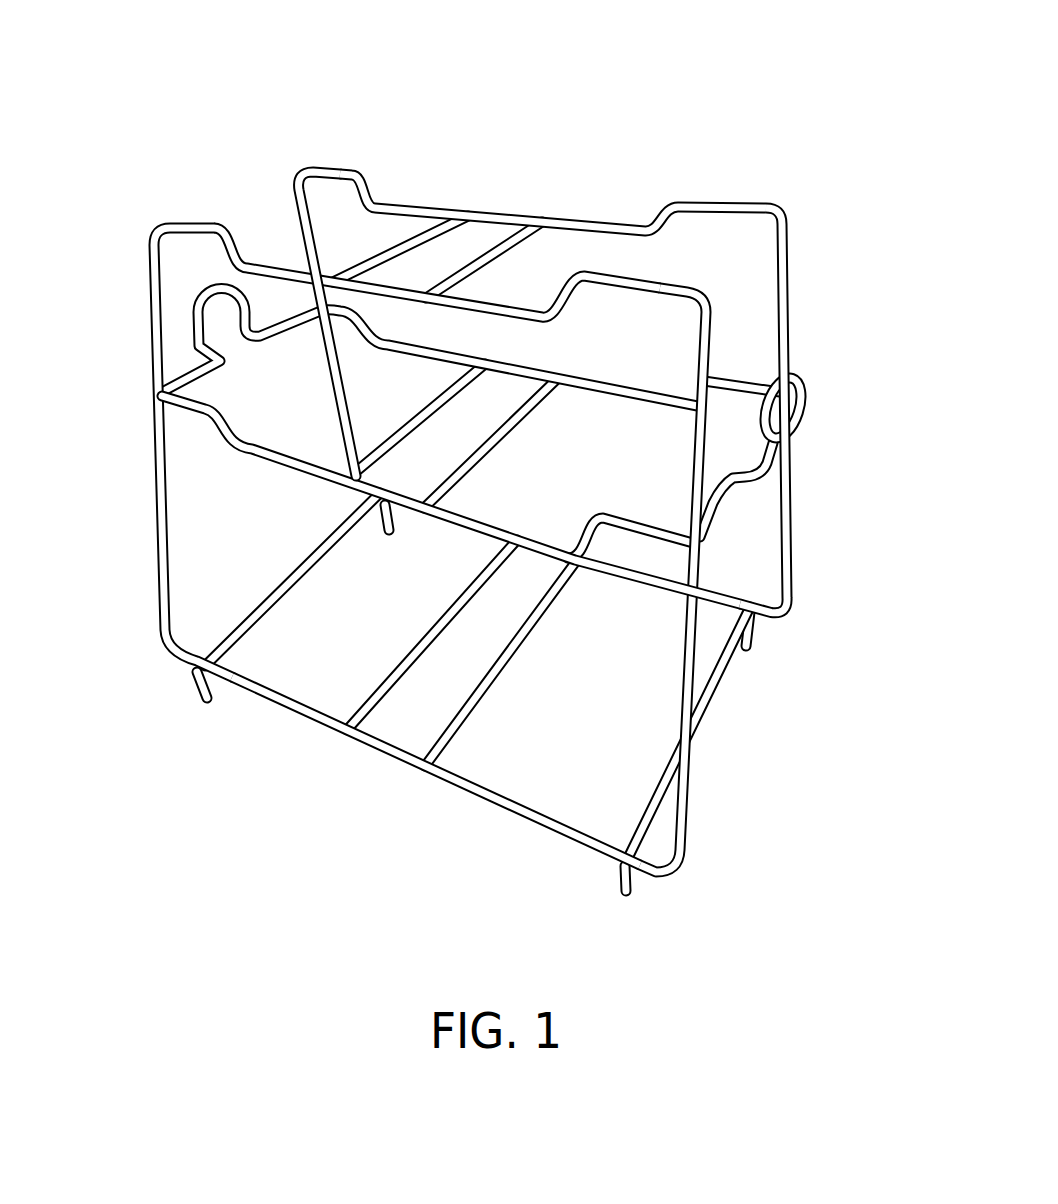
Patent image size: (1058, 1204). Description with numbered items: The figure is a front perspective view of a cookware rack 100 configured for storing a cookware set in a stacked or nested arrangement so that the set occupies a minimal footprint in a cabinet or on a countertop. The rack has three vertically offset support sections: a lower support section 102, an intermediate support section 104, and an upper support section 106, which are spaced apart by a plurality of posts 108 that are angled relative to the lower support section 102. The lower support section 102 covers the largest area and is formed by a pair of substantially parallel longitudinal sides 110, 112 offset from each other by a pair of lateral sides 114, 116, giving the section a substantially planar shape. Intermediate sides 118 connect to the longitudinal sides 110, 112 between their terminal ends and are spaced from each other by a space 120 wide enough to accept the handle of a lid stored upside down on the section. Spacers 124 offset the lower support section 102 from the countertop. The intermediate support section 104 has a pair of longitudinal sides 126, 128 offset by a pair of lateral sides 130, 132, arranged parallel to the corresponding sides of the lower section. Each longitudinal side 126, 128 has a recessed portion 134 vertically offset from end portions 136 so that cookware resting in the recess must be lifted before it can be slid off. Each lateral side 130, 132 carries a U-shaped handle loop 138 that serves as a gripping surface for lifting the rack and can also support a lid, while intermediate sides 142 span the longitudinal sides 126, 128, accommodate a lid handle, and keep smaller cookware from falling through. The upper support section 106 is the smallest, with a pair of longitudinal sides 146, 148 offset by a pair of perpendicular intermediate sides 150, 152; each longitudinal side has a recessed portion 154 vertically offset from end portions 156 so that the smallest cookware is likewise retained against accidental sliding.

The cookware rack 100 is at (778, 87).
The lower support section 102 is at (775, 756).
The intermediate support section 104 is at (870, 463).
The upper support section 106 is at (889, 247).
The posts 108 is at (142, 421).
The longitudinal side 110 is at (436, 772).
The longitudinal side 112 is at (633, 576).
The lateral side 114 is at (720, 673).
The lateral side 116 is at (277, 596).
The intermediate side 118 is at (397, 674).
The space 120 is at (395, 752).
The spacers 124 is at (625, 893).
The longitudinal side 126 is at (389, 344).
The longitudinal side 128 is at (451, 525).
The lateral side 130 is at (713, 505).
The lateral side 132 is at (203, 376).
The recessed portion 134 is at (388, 487).
The end portions 136 is at (650, 528).
The handle loop 138 is at (389, 344).
The intermediate side 142 is at (509, 427).
The longitudinal side 146 is at (570, 223).
The longitudinal side 148 is at (193, 222).
The intermediate side 150 is at (437, 228).
The intermediate side 152 is at (517, 235).
The recessed portion 154 is at (470, 257).
The end portions 156 is at (653, 284).